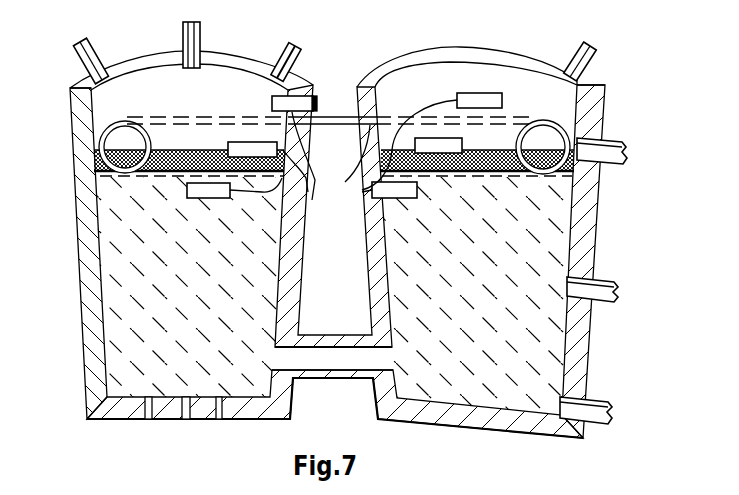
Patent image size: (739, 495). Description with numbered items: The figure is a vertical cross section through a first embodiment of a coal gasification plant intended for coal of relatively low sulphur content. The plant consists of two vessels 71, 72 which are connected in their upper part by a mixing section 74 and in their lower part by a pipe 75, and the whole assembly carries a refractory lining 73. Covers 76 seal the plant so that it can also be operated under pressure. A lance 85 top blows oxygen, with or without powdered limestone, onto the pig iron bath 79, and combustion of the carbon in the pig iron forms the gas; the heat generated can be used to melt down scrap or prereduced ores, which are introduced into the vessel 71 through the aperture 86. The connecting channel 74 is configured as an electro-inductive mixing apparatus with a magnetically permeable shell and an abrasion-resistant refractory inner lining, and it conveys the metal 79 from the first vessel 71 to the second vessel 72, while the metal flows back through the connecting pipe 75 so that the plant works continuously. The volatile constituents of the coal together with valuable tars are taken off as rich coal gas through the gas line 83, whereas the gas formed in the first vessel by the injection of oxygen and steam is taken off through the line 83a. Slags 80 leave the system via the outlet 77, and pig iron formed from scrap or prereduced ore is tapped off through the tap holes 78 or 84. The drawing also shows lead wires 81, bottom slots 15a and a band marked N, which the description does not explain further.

The slots in bottom wall 15a is at (219, 420).
The vessel 71 is at (220, 77).
The vessel 72 is at (480, 75).
The refractory lining 73 is at (93, 332).
The mixing section 74 is at (110, 142).
The pipe 75 is at (352, 360).
The cover 76 is at (133, 62).
The outlet 77 is at (618, 138).
The tap hole 78 is at (610, 278).
The pig iron bath 79 is at (110, 252).
The slags 80 is at (285, 170).
The lead wires 81 is at (364, 192).
The gas line 83 is at (575, 50).
The gas line 83a is at (292, 45).
The tap hole 84 is at (597, 410).
The lance 85 is at (200, 32).
The aperture 86 is at (90, 50).
The magnetic band N is at (93, 173).